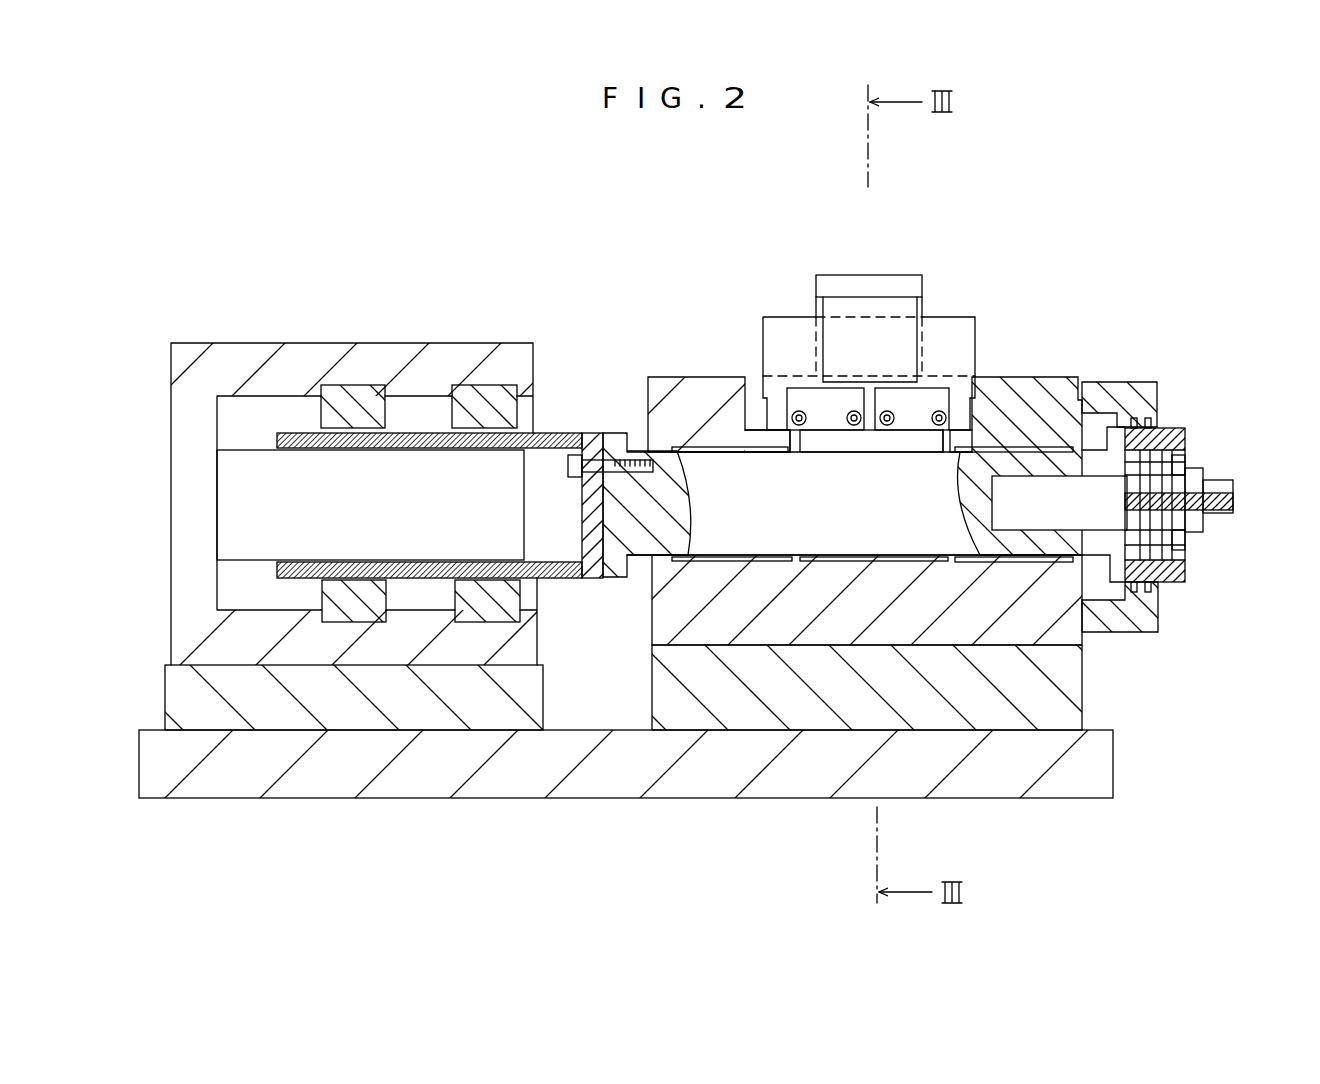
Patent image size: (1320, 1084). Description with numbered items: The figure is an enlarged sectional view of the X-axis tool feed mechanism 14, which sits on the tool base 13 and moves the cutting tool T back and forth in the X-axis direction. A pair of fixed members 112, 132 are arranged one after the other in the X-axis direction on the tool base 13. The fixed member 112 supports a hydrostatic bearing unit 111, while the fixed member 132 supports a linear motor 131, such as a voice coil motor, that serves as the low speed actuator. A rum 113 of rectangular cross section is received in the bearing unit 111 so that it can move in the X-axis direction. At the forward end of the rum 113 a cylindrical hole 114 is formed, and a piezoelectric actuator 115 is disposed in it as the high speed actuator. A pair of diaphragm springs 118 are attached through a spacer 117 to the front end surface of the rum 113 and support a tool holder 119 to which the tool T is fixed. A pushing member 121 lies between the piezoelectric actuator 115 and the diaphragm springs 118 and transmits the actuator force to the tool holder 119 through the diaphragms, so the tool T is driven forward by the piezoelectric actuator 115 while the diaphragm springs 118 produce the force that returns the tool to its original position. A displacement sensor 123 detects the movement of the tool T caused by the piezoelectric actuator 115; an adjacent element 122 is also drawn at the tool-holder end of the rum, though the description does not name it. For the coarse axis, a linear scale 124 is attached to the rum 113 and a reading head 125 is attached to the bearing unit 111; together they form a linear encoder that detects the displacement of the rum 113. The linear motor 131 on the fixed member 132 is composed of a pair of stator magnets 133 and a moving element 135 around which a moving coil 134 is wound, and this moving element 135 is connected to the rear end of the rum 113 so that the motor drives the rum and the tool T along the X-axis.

The tool base 13 is at (1098, 770).
The tool feed mechanism 14 is at (1084, 222).
The hydrostatic bearing unit 111 is at (1008, 390).
The fixed member 112 is at (1057, 700).
The rum 113 is at (723, 463).
The cylindrical hole 114 is at (1053, 485).
The piezoelectric actuator 115 is at (1086, 485).
The spacer 117 is at (1132, 447).
The diaphragm springs 118 is at (1185, 462).
The tool holder 119 is at (1210, 470).
The pushing member 121 is at (1100, 607).
The spindle nose 122 is at (1177, 582).
The displacement sensor 123 is at (1180, 467).
The linear scale 124 is at (945, 328).
The reading head 125 is at (840, 285).
The linear motor 131 is at (468, 353).
The fixed member 132 is at (173, 690).
The stator magnets 133 is at (440, 385).
The moving coil 134 is at (447, 578).
The moving element 135 is at (562, 433).
The tool T is at (1213, 520).